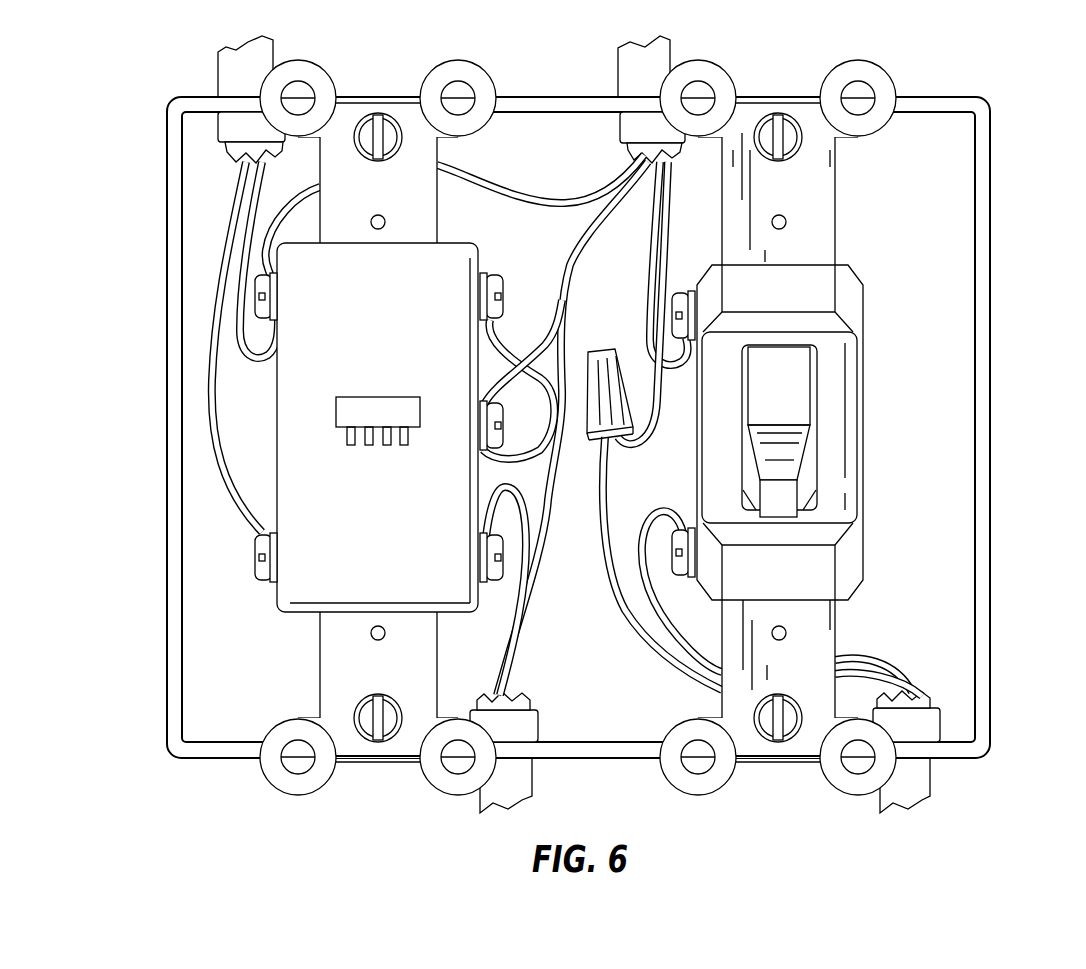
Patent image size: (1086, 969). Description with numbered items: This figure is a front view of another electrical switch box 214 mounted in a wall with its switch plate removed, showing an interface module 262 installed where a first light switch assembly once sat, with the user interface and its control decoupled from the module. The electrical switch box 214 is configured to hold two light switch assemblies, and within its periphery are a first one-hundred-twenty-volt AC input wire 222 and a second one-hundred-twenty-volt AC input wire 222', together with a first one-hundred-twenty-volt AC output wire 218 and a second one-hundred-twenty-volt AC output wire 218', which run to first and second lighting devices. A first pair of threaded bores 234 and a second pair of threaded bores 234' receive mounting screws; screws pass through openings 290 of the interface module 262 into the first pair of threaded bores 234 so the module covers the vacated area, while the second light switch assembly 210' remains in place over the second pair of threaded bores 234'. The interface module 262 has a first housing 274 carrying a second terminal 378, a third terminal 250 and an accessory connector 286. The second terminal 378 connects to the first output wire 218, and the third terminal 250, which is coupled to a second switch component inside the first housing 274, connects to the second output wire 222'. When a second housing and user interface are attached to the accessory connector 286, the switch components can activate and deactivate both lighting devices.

The electrical switch box 214 is at (990, 163).
The first 120 V AC output wire 218 is at (223, 99).
The second 120 V AC output wire 218' is at (676, 88).
The first 120 V AC input wire 222 is at (536, 752).
The second 120 V AC input wire 222' is at (938, 754).
The first pair of threaded bores 234 is at (376, 430).
The second pair of threaded bores 234' is at (792, 430).
The third terminal 250 is at (556, 300).
The interface module 262 is at (226, 510).
The first housing 274 is at (498, 272).
The accessory connector 286 is at (334, 412).
The openings 290 is at (363, 120).
The second light switch assembly 210' is at (862, 427).
The second terminal 378 is at (262, 570).